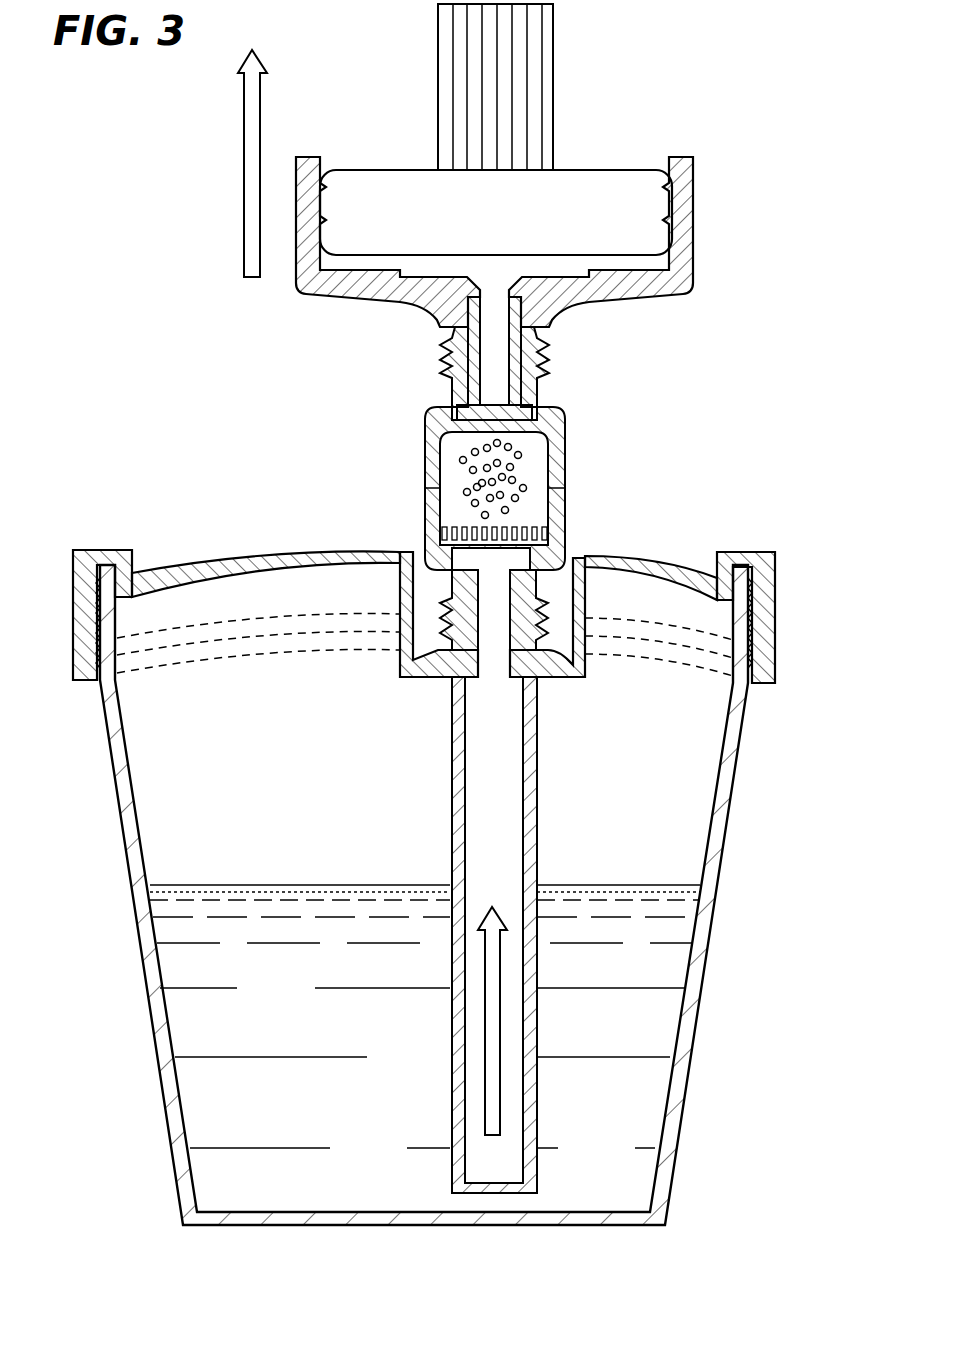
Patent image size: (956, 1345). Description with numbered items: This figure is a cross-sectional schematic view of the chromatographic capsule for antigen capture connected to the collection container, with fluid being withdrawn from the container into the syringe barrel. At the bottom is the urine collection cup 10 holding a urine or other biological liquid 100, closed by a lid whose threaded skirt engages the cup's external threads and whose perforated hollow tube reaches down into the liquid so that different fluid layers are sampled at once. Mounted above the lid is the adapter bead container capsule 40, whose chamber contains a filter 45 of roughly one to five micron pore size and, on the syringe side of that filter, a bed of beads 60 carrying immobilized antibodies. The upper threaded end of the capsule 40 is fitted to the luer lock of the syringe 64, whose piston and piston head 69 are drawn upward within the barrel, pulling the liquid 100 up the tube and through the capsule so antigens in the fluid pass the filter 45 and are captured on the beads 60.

The urine collection cup 10 is at (757, 745).
The adapter bead container capsule 40 is at (570, 485).
The filter 45 is at (549, 547).
The beads 60 is at (462, 459).
The syringe 64 is at (698, 242).
The piston head 69 is at (673, 178).
The biological liquid 100 is at (648, 978).